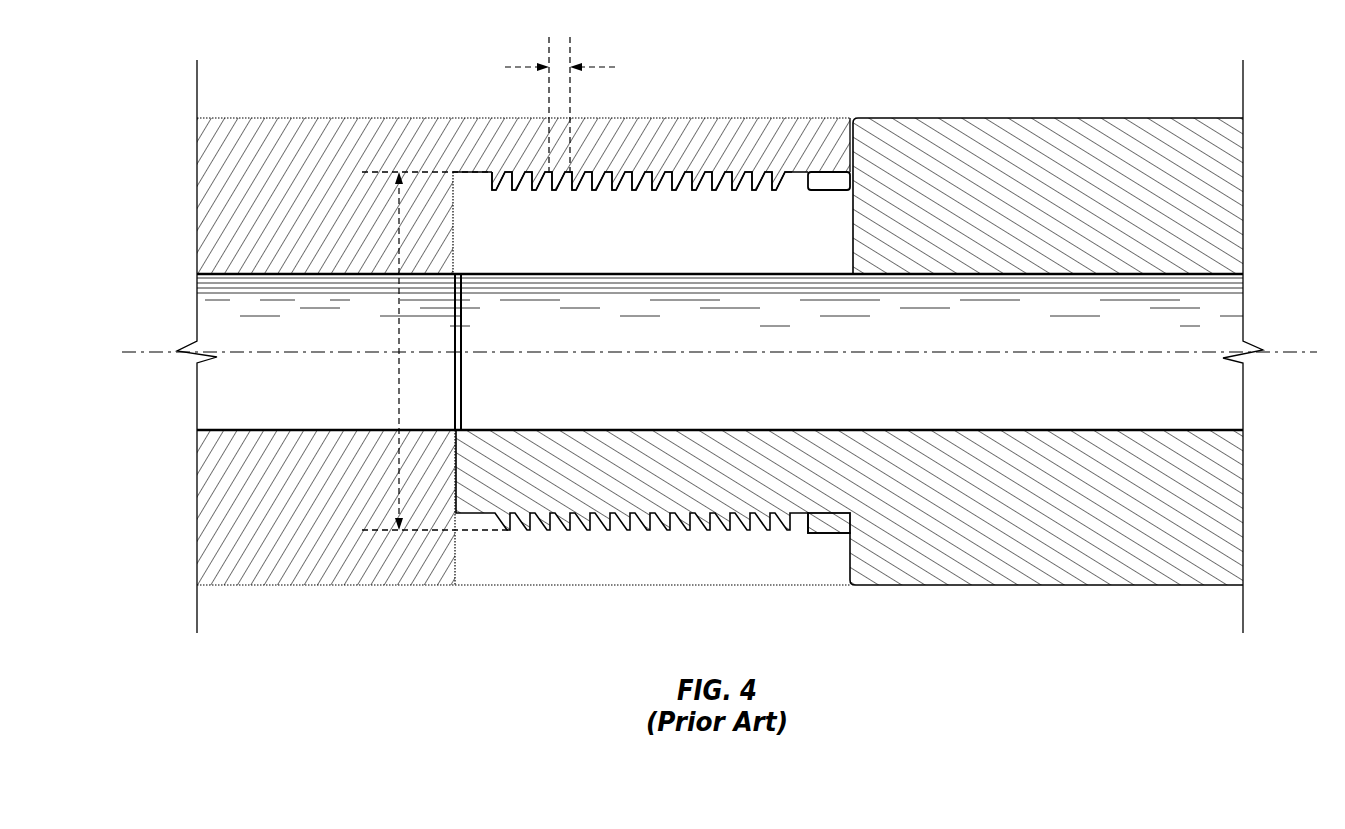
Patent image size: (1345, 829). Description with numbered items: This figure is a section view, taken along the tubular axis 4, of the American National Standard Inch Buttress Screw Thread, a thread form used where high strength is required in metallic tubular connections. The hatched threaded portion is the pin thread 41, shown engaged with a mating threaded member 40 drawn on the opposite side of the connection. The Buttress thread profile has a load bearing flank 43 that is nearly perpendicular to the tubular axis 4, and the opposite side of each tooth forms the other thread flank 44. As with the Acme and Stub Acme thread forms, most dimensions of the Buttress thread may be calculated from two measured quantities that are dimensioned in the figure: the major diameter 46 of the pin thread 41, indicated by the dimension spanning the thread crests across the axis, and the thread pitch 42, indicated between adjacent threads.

The pipe with threaded end 40 is at (1050, 118).
The pin thread 41 is at (318, 118).
The thread pitch 42 is at (515, 67).
The load bearing flank 43 is at (738, 178).
The thread flank 44 is at (700, 178).
The major diameter 46 is at (399, 325).
The tubular axis 4 is at (152, 352).